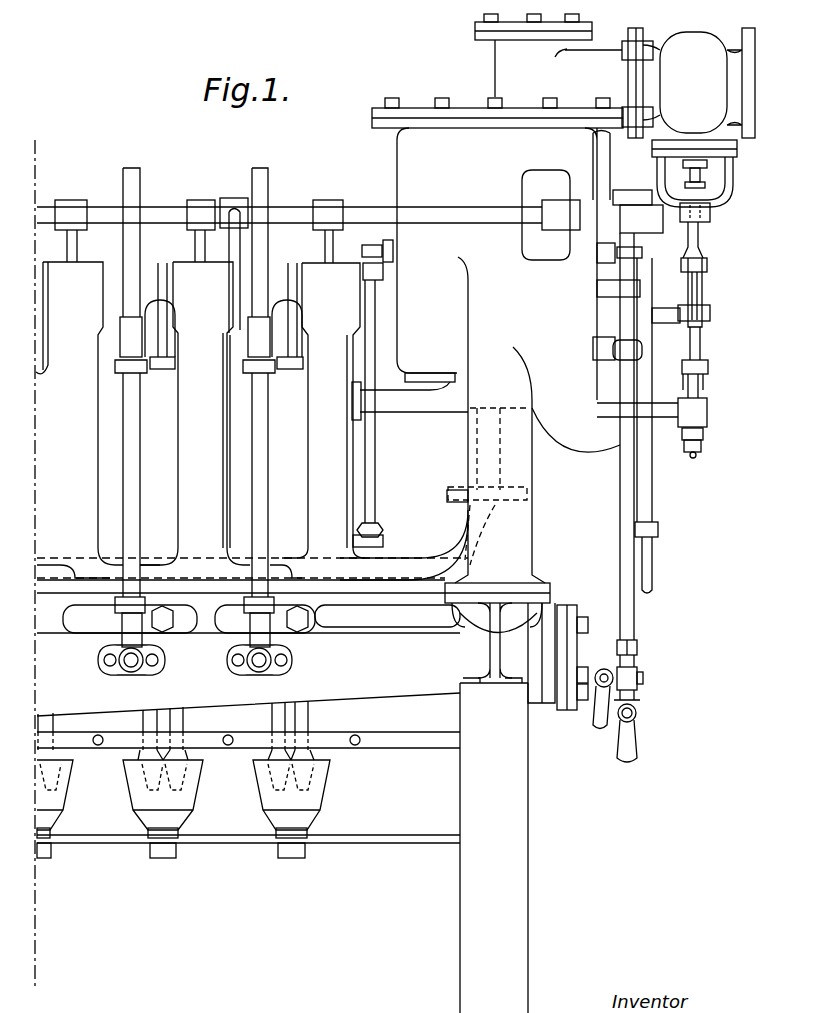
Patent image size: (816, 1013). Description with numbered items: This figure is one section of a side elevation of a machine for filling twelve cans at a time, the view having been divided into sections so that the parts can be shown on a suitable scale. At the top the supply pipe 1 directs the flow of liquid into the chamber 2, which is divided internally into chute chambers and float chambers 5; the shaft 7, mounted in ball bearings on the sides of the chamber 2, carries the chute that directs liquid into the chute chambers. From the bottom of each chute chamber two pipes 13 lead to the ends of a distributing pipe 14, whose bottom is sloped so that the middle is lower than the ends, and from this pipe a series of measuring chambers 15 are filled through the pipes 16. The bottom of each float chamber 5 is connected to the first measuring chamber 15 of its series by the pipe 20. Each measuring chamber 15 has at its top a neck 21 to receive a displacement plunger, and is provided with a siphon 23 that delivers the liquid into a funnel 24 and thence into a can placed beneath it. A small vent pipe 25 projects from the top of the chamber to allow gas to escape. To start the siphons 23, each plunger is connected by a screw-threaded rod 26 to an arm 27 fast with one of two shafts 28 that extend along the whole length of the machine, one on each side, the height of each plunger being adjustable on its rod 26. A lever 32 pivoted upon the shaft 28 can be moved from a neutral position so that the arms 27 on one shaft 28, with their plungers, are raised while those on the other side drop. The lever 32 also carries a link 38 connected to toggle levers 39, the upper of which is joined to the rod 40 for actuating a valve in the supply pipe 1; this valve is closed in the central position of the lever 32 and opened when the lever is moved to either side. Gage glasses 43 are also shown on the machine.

The supply pipe 1 is at (655, 117).
The chamber 2 is at (525, 233).
The float chamber 5 is at (430, 373).
The shaft 7 is at (370, 256).
The pipe 13 is at (406, 563).
The distributing pipe 14 is at (312, 711).
The measuring chamber 15 is at (252, 420).
The pipe 16 is at (266, 531).
The pipe 20 is at (396, 412).
The neck 21 is at (323, 410).
The siphon 23 is at (283, 310).
The funnel 24 is at (317, 801).
The vent pipe 25 is at (290, 268).
The rod 26 is at (330, 251).
The arm 27 is at (203, 207).
The shaft 28 is at (438, 212).
The lever 32 is at (652, 498).
The link 38 is at (668, 308).
The toggle levers 39 is at (701, 290).
The rod 40 is at (700, 241).
The gage glasses 43 is at (636, 623).